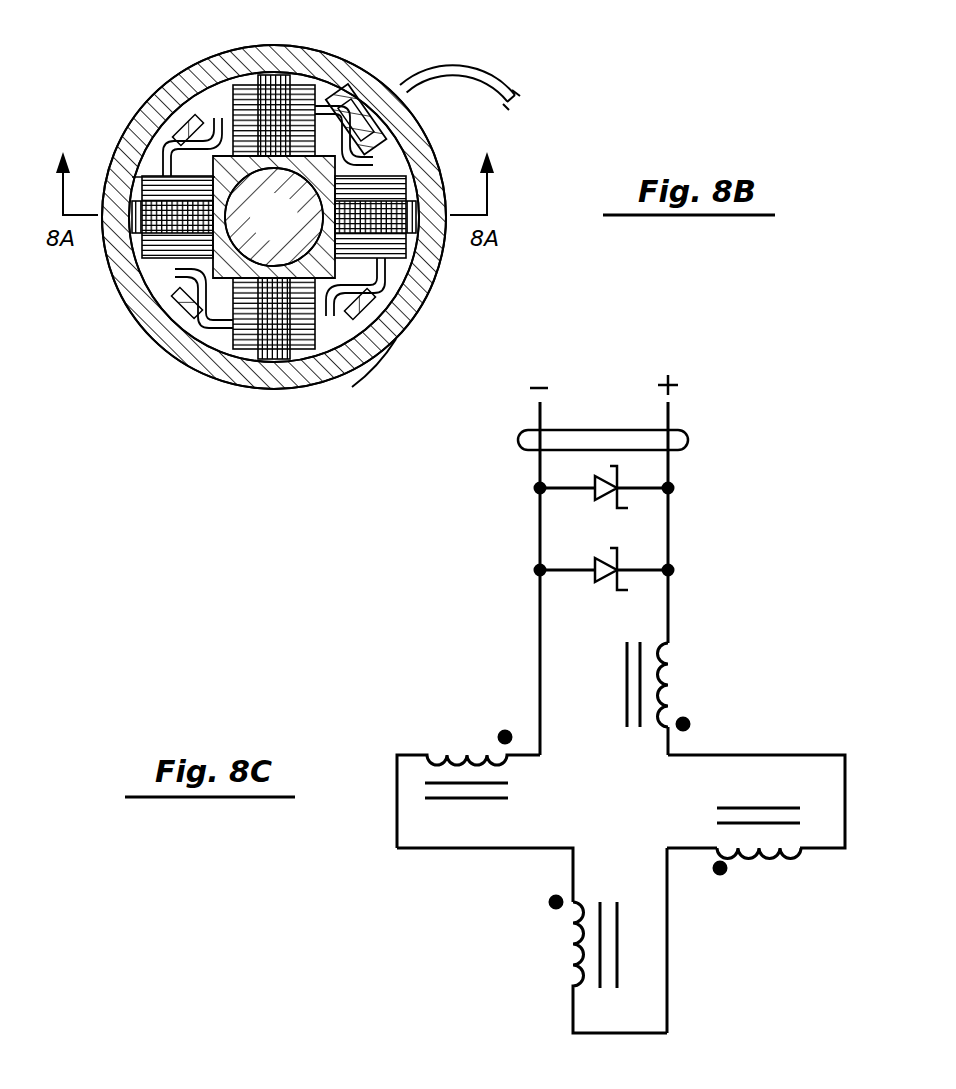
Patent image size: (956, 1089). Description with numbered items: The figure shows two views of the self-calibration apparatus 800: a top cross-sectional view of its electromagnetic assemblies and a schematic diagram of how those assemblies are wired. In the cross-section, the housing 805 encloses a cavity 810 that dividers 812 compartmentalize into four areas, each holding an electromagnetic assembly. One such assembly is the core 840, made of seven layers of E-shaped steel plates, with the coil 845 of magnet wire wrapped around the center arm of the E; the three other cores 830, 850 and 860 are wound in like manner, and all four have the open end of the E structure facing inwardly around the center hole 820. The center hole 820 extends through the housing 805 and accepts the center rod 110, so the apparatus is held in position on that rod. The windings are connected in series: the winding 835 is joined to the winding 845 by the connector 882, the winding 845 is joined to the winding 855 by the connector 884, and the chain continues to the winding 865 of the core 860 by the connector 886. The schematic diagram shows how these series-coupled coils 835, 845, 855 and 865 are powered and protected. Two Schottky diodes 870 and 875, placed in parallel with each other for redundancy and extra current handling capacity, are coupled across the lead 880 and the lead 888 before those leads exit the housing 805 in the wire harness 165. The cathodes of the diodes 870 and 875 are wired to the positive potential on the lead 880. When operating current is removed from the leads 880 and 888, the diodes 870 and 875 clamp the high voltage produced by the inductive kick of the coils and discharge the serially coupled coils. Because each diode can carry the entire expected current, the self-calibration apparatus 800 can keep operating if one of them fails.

In FIG. 8B, the center rod 110 is at (292, 231).
In FIG. 8B, the wire harness 165 is at (455, 72).
In FIG. 8C, the wire harness 165 is at (688, 437).
In FIG. 8B, the self-calibration apparatus 800 is at (503, 132).
In FIG. 8B, the housing 805 is at (144, 322).
In FIG. 8B, the cavity 810 is at (340, 330).
In FIG. 8B, the dividers 812 is at (210, 137).
In FIG. 8B, the center hole 820 is at (378, 318).
In FIG. 8B, the core 830 is at (270, 77).
In FIG. 8C, the core 830 is at (627, 677).
In FIG. 8B, the winding 835 is at (307, 92).
In FIG. 8C, the winding 835 is at (663, 677).
In FIG. 8B, the core 840 is at (147, 283).
In FIG. 8C, the core 840 is at (763, 807).
In FIG. 8B, the coil 845 is at (160, 175).
In FIG. 8C, the coil 845 is at (775, 850).
In FIG. 8B, the core 850 is at (265, 355).
In FIG. 8C, the core 850 is at (623, 938).
In FIG. 8B, the winding 855 is at (320, 342).
In FIG. 8C, the winding 855 is at (580, 953).
In FIG. 8B, the core 860 is at (387, 258).
In FIG. 8C, the core 860 is at (481, 800).
In FIG. 8B, the winding 865 is at (358, 306).
In FIG. 8C, the winding 865 is at (440, 757).
In FIG. 8B, the Schottky diode 870 is at (360, 93).
In FIG. 8C, the Schottky diode 870 is at (610, 496).
In FIG. 8B, the Schottky diode 875 is at (380, 122).
In FIG. 8C, the Schottky diode 875 is at (610, 586).
In FIG. 8C, the lead 880 is at (668, 611).
In FIG. 8B, the connector 882 is at (190, 128).
In FIG. 8C, the connector 882 is at (750, 755).
In FIG. 8B, the connector 884 is at (180, 340).
In FIG. 8C, the connector 884 is at (668, 940).
In FIG. 8B, the connector 886 is at (365, 305).
In FIG. 8C, the connector 886 is at (457, 850).
In FIG. 8C, the lead 888 is at (540, 611).